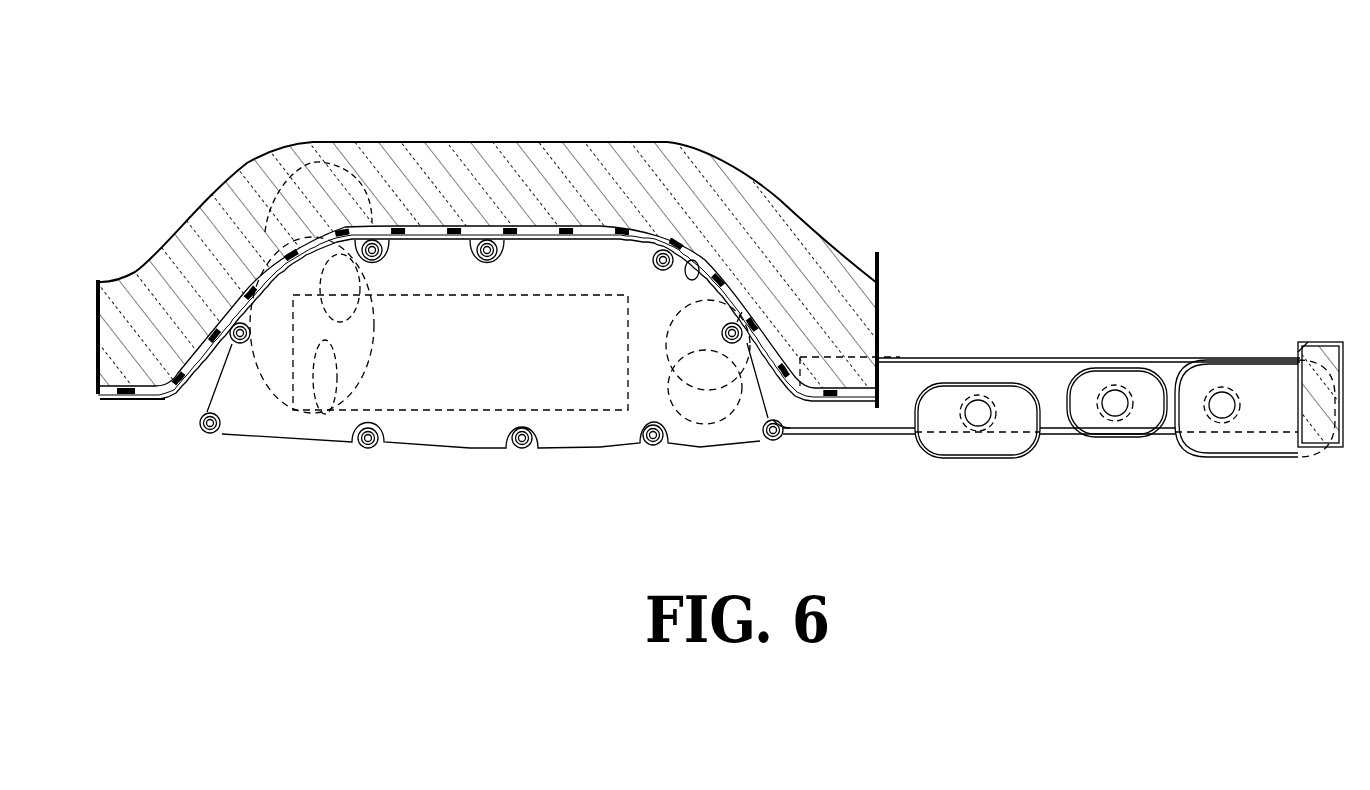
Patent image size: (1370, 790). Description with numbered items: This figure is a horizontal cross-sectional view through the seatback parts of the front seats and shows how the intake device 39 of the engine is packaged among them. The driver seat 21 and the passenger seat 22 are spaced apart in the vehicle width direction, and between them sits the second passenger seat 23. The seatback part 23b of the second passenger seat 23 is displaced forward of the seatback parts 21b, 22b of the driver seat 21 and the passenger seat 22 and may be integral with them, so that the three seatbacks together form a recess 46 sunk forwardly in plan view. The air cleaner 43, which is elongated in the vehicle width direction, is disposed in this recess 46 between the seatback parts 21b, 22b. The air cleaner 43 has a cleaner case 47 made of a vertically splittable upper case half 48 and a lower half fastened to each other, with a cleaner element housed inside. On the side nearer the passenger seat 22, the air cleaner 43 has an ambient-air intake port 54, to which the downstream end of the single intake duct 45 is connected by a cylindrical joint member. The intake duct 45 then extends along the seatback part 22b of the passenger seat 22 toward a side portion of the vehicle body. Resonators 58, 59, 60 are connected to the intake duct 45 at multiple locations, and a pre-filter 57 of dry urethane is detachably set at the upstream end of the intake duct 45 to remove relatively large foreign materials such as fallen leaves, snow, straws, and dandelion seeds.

The driver seat 21 is at (151, 404).
The seatback part of the driver seat 21b is at (123, 373).
The passenger seat 22 is at (862, 402).
The seatback part of the passenger seat 22b is at (828, 372).
The second passenger seat 23 is at (579, 245).
The seatback part of the second passenger seat 23b is at (424, 222).
The intake device 39 is at (849, 442).
The air cleaner 43 is at (475, 457).
The intake duct 45 is at (1013, 365).
The recess 46 is at (713, 267).
The cleaner case 47 is at (486, 390).
The upper case half 48 is at (588, 427).
The ambient-air intake port 54 is at (700, 403).
The pre-filter 57 is at (1312, 344).
The resonator 58 is at (938, 396).
The resonator 59 is at (1088, 379).
The resonator 60 is at (1213, 368).